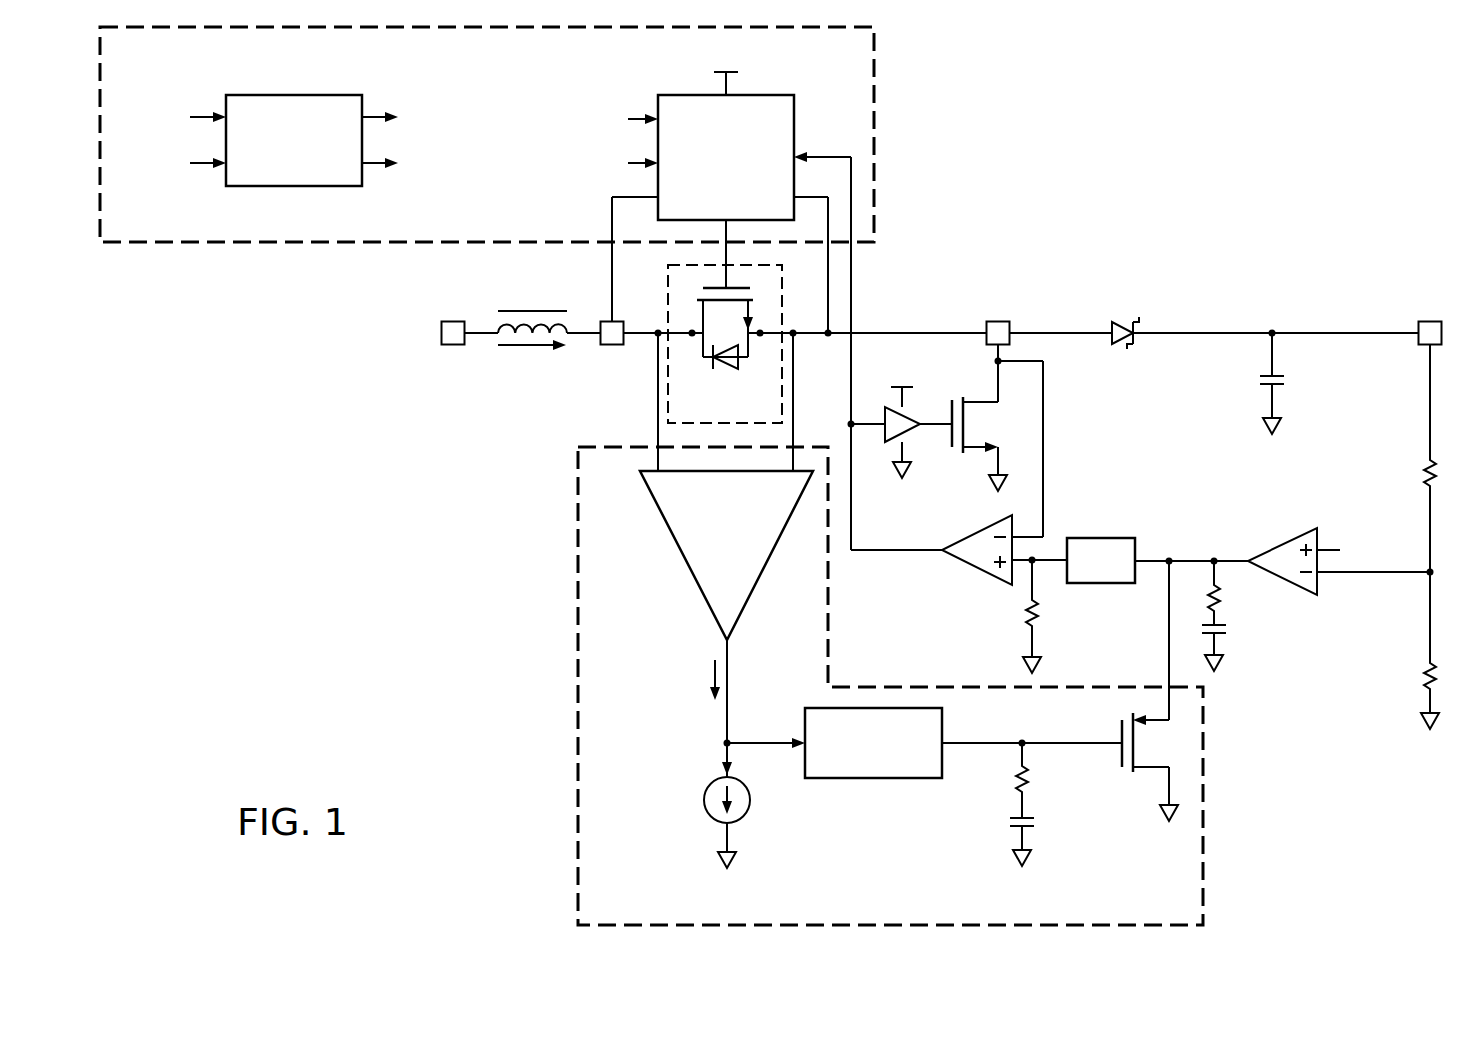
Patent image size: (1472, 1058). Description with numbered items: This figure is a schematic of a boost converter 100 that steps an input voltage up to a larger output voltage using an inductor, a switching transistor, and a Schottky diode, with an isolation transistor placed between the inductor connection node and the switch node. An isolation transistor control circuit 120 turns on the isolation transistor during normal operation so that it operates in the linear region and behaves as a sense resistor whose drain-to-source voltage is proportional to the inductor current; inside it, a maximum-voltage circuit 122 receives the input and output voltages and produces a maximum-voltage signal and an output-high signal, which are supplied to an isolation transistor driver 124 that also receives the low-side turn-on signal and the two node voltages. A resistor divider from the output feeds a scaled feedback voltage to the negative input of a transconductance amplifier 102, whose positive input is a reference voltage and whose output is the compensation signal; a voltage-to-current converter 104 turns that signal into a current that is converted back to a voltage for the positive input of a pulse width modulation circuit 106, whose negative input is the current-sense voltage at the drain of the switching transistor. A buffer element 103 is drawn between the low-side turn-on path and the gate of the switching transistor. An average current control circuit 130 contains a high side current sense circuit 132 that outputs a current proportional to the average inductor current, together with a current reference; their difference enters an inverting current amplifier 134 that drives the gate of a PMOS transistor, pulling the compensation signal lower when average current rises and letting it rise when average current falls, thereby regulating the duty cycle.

The boost converter 100 is at (1190, 104).
The transconductance amplifier 102 is at (1283, 544).
The buffer 103 is at (908, 430).
The voltage-to-current (V2I) converter 104 is at (1099, 583).
The PWM circuit 106 is at (978, 570).
The ISO_FET control circuit 120 is at (880, 94).
The VMAX circuit 122 is at (294, 95).
The ISO FET driver 124 is at (705, 203).
The average current control circuit 130 is at (568, 697).
The high side (HSD) current sense circuit 132 is at (682, 556).
The current amplifier 134 is at (873, 778).